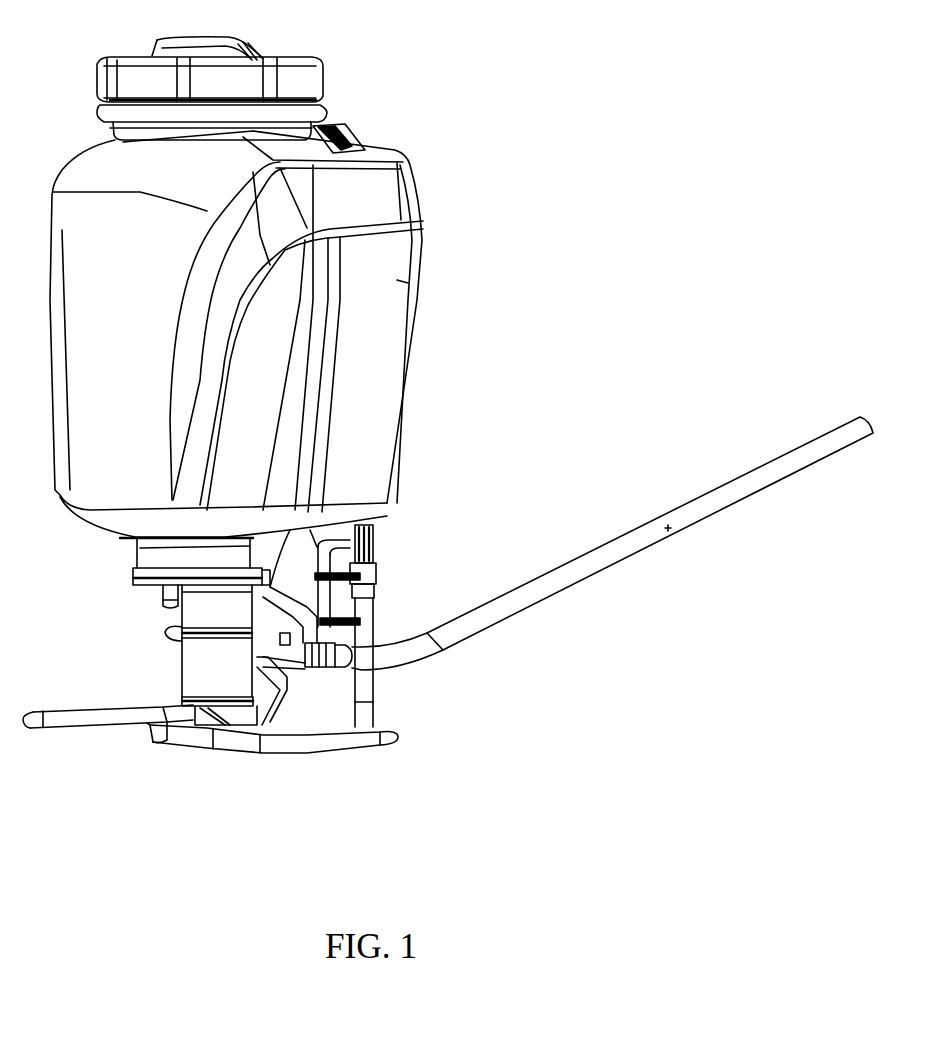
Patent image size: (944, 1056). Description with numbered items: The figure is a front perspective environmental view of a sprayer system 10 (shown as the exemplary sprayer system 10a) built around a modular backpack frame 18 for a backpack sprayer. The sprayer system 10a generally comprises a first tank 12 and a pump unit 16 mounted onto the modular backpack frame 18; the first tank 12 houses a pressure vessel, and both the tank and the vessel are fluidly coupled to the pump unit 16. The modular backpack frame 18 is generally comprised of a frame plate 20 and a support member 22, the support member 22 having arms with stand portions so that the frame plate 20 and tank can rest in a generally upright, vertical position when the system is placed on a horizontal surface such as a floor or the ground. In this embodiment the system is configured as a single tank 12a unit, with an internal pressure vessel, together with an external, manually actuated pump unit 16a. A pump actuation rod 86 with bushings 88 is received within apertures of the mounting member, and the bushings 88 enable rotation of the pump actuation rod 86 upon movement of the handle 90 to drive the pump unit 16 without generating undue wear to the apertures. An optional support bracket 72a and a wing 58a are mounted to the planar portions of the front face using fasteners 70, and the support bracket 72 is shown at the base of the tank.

The sprayer system 10 is at (585, 82).
The exemplary sprayer system 10a is at (380, 137).
The first tank 12 is at (403, 290).
The single tank 12a is at (397, 447).
The fasteners 70 is at (258, 540).
The wing 58a is at (333, 507).
The frame plate 20 is at (313, 567).
The modular backpack frame 18 is at (375, 600).
The mounting flange 72 is at (140, 558).
The support bracket 72a is at (213, 570).
The pump actuation rod 86 is at (165, 636).
The pump unit 16 is at (178, 663).
The manually actuated pump unit 16a is at (190, 690).
The bushings 88 is at (340, 667).
The handle 90 is at (608, 570).
The support member 22 is at (303, 753).